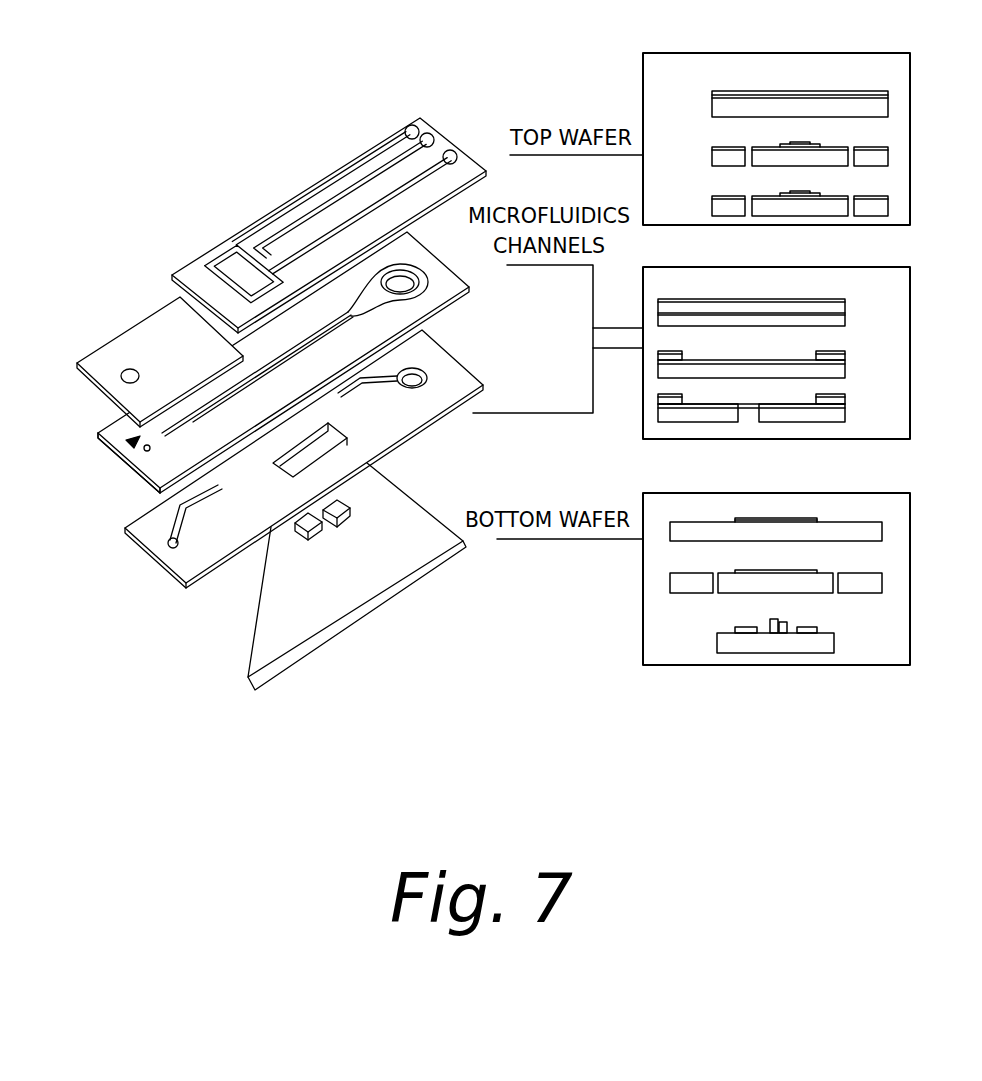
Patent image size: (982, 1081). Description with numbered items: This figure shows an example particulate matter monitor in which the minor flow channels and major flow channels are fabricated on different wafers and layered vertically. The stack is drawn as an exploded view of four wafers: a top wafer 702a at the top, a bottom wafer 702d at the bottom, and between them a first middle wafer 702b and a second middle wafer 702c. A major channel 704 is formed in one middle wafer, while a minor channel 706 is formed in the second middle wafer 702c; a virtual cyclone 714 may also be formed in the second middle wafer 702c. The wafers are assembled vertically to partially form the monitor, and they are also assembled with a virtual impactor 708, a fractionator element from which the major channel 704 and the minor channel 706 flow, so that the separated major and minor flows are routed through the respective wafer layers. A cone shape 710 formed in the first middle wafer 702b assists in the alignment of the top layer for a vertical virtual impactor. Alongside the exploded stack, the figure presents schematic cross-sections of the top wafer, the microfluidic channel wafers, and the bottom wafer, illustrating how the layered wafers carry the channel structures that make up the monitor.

The top wafer 702a is at (433, 123).
The first middle wafer 702b is at (143, 451).
The second middle wafer 702c is at (183, 568).
The bottom wafer 702d is at (268, 620).
The major channel 704 is at (365, 308).
The minor channel 706 is at (342, 398).
The virtual impactor 708 is at (167, 317).
The cone shape 710 is at (103, 435).
The virtual cyclone 714 is at (166, 546).